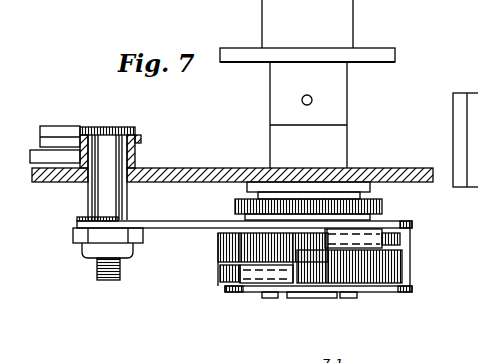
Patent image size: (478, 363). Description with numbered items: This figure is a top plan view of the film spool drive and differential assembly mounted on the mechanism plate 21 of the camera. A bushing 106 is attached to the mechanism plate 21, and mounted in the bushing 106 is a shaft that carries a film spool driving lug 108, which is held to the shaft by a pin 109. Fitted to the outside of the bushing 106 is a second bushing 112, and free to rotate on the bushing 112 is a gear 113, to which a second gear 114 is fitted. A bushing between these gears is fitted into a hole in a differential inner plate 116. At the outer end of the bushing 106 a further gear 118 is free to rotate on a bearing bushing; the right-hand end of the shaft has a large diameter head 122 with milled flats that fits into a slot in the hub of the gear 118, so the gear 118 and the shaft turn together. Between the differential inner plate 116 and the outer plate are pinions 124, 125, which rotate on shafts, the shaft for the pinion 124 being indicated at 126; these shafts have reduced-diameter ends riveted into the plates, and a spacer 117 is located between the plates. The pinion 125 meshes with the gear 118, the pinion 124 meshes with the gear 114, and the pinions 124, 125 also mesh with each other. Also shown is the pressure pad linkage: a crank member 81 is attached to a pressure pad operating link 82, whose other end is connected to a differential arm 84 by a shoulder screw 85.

The mechanism plate 21 is at (200, 172).
The crank member 81 is at (60, 132).
The pressure pad operating link 82 is at (141, 138).
The differential arm 84 is at (175, 221).
The shoulder screw 85 is at (115, 130).
The bushing 106 is at (332, 147).
The film spool driving lug 108 is at (342, 23).
The pin 109 is at (312, 99).
The second bushing 112 is at (360, 193).
The gear 113 is at (383, 212).
The second gear 114 is at (400, 242).
The differential inner plate 116 is at (413, 225).
The spacer 117 is at (403, 256).
The gear 118 is at (222, 275).
The large diameter head 122 is at (310, 298).
The pinion 124 is at (222, 250).
The pinion 125 is at (400, 275).
The shaft 126 is at (350, 298).